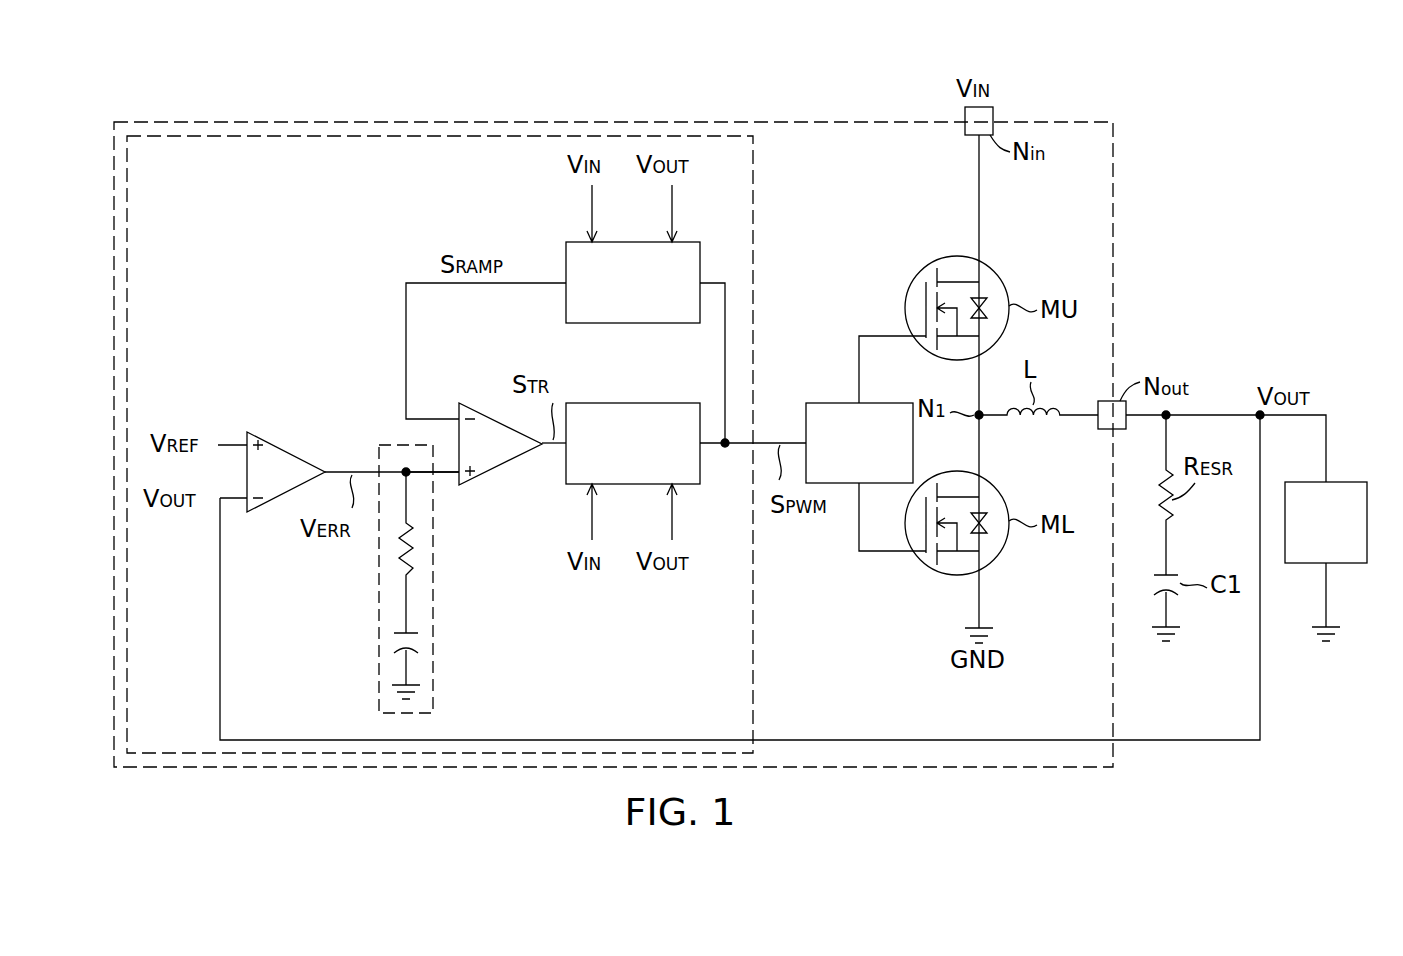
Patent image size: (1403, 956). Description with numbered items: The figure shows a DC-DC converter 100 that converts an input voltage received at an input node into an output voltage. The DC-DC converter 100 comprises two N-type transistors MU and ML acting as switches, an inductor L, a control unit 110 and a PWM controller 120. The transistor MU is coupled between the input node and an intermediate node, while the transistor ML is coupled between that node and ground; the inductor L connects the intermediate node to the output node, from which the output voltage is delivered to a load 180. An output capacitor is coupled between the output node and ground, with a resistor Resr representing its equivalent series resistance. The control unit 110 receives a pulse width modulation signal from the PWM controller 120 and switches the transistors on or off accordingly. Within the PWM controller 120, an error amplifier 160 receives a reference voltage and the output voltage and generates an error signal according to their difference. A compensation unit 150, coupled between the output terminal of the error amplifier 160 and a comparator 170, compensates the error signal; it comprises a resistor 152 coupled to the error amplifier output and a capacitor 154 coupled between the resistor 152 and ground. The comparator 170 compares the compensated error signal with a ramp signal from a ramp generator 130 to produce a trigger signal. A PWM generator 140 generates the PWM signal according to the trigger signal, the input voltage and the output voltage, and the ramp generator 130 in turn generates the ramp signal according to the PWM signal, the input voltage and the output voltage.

The DC-DC converter 100 is at (454, 120).
The control unit 110 is at (835, 403).
The PWM controller 120 is at (754, 683).
The ramp generator 130 is at (602, 323).
The PWM generator 140 is at (663, 403).
The compensation unit 150 is at (443, 579).
The resistor 152 is at (412, 553).
The capacitor 154 is at (418, 640).
The error amplifier 160 is at (293, 448).
The comparator 170 is at (503, 463).
The load 180 is at (1340, 482).